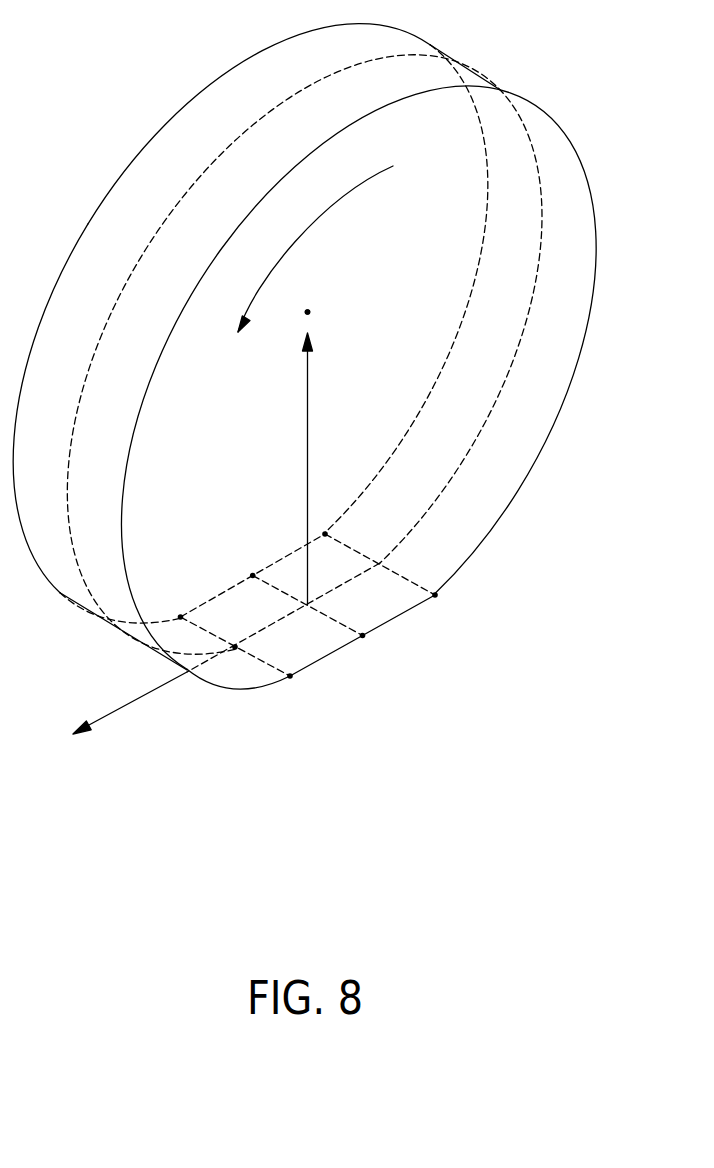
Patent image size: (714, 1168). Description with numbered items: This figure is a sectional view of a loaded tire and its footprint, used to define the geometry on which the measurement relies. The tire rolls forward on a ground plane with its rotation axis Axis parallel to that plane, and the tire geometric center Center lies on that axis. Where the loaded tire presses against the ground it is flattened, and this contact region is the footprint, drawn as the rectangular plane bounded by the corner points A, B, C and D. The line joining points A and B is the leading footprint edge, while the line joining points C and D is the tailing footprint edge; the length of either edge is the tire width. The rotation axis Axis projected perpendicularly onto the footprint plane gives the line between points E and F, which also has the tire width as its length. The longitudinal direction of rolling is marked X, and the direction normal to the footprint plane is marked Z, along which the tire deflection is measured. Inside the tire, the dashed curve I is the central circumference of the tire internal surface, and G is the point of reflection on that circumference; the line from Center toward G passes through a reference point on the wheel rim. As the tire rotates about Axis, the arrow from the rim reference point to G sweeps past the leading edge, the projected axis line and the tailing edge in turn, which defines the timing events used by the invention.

The central circumference of tire internal surface I is at (147, 243).
The tire geometric center Center is at (347, 297).
The rotation axis Axis is at (316, 317).
The normal direction of plane ABCD Z is at (294, 469).
The longitudinal direction X is at (207, 664).
The footprint corner point A is at (173, 598).
The footprint corner point B is at (299, 694).
The footprint corner point C is at (321, 513).
The footprint corner point D is at (443, 611).
The projected line endpoint E is at (246, 559).
The projected line endpoint F is at (370, 653).
The point of reflection G is at (235, 650).